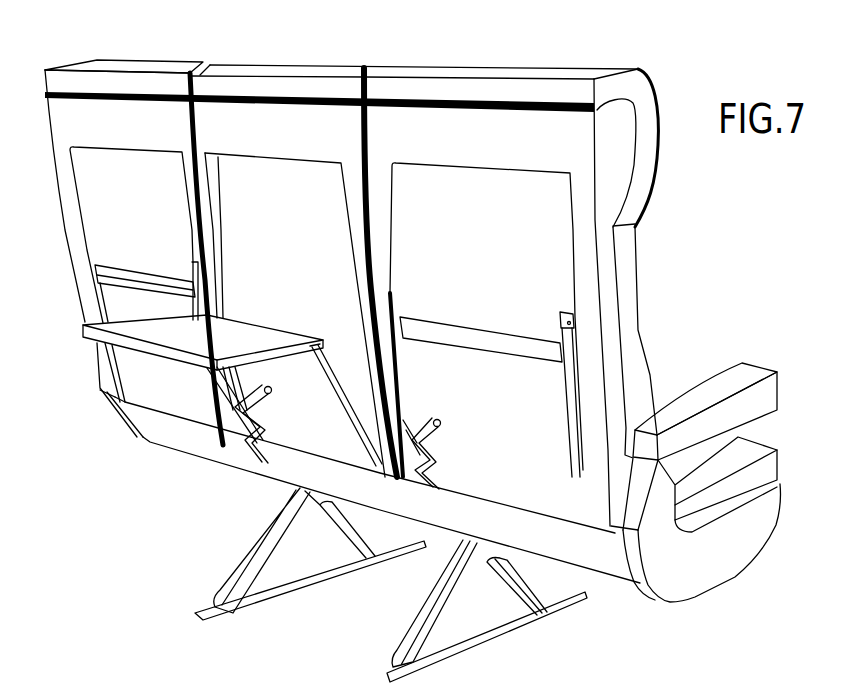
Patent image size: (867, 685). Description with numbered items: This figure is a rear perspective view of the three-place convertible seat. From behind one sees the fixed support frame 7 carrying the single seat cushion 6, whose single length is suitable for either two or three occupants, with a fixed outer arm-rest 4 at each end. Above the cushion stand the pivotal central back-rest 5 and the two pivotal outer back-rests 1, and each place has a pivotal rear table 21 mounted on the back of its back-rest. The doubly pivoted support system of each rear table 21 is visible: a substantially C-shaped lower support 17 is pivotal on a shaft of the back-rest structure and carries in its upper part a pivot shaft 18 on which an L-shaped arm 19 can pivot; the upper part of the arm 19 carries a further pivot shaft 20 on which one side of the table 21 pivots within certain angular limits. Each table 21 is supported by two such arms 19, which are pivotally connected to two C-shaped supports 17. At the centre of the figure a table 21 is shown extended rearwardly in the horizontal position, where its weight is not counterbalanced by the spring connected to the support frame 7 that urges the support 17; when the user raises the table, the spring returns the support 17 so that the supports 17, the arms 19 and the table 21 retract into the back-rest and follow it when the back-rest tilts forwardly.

The pivotal outer back-rest 1 is at (646, 113).
The fixed outer arm-rest 4 is at (715, 393).
The pivotal central back-rest 5 is at (342, 72).
The seat cushion 6 is at (752, 453).
The fixed support frame 7 is at (418, 617).
The C-shaped lower support 17 is at (273, 430).
The pivot shaft 18 is at (274, 392).
The L-shaped arm 19 is at (207, 430).
The pivot shaft 20 is at (323, 340).
The rear table 21 is at (146, 223).